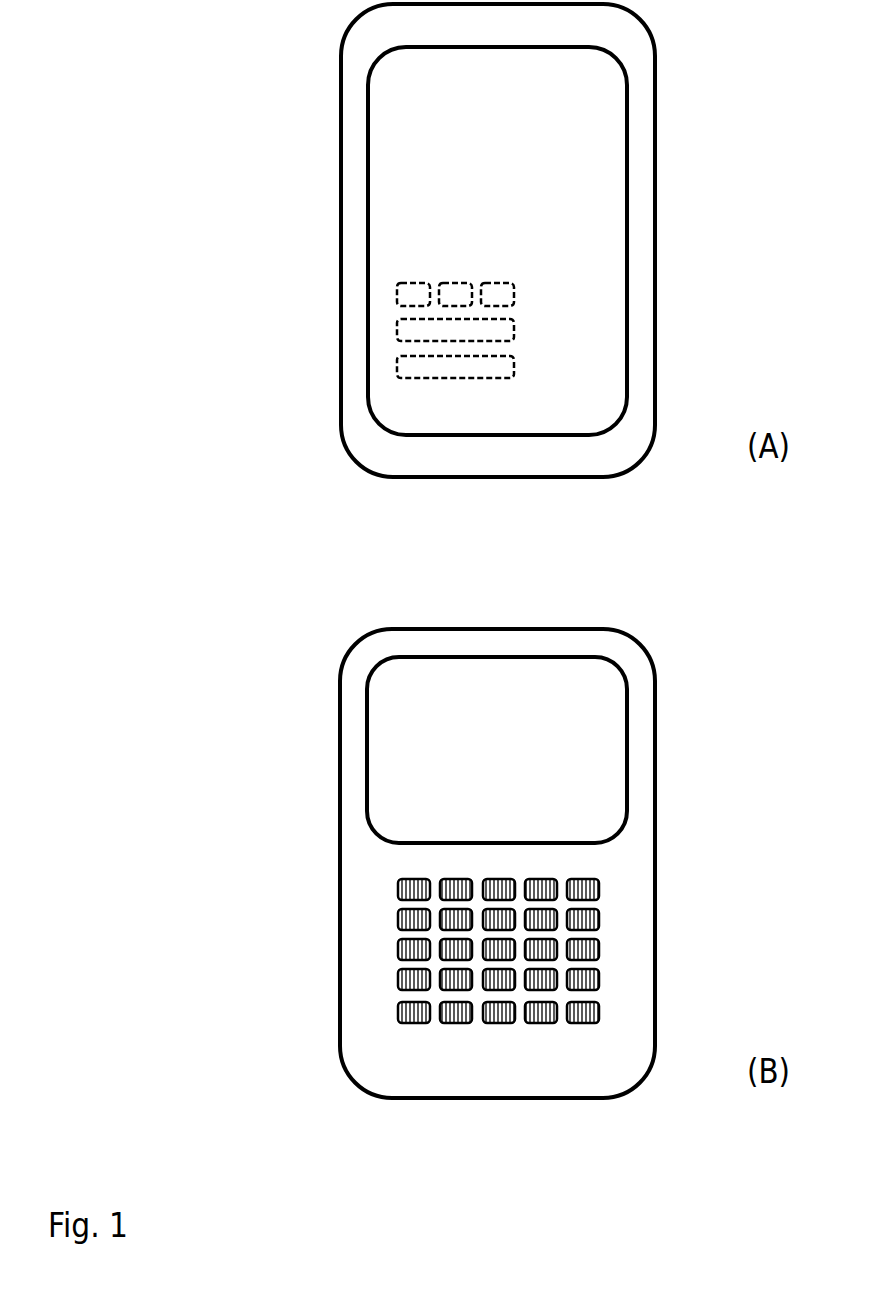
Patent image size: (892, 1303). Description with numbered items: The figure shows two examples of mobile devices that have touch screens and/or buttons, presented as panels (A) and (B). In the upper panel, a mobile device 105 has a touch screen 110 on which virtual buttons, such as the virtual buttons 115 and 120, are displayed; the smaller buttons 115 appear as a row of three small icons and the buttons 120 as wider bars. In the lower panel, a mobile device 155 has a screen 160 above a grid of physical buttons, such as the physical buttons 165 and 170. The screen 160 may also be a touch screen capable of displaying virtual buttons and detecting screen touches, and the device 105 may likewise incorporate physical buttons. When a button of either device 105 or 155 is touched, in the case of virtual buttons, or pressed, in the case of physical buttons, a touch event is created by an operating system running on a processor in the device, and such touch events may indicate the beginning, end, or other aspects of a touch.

The mobile device 105 is at (665, 127).
The touch screen 110 is at (519, 145).
The virtual button 115 is at (510, 280).
The virtual button 120 is at (512, 329).
The mobile device 155 is at (662, 752).
The screen 160 is at (519, 741).
The physical button 165 is at (415, 1023).
The physical button 170 is at (538, 1023).